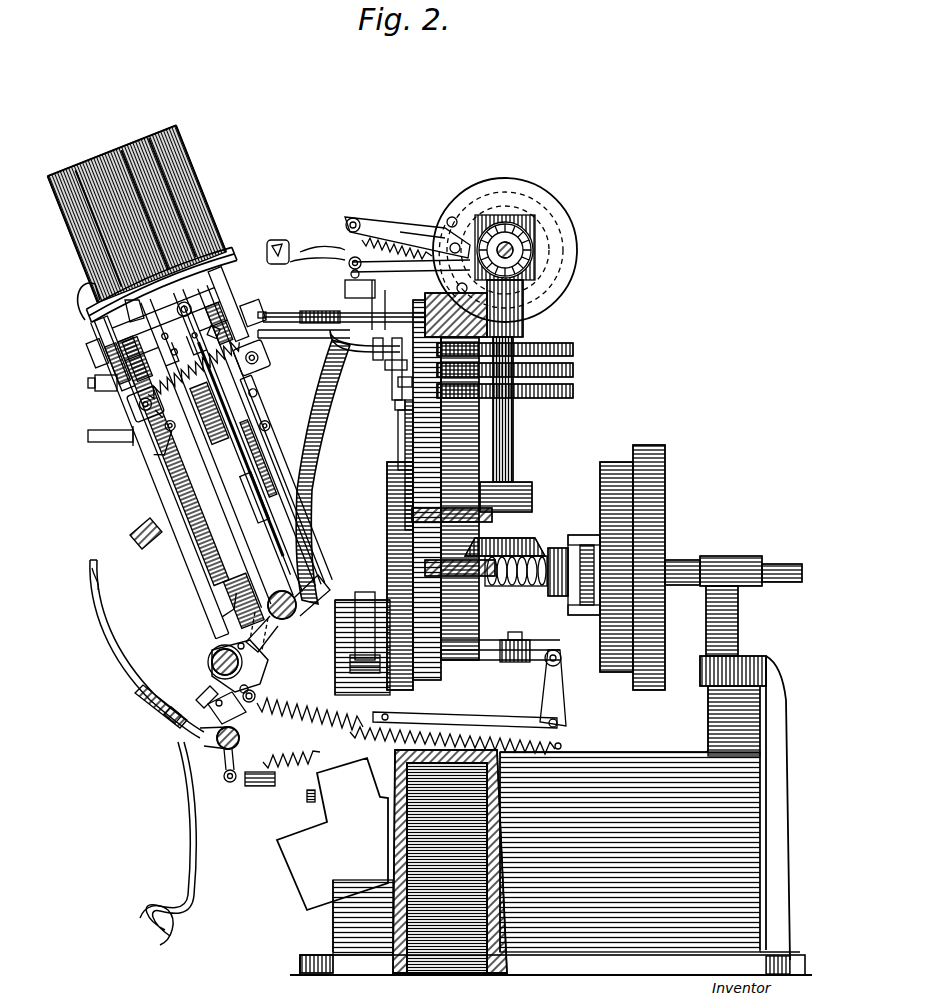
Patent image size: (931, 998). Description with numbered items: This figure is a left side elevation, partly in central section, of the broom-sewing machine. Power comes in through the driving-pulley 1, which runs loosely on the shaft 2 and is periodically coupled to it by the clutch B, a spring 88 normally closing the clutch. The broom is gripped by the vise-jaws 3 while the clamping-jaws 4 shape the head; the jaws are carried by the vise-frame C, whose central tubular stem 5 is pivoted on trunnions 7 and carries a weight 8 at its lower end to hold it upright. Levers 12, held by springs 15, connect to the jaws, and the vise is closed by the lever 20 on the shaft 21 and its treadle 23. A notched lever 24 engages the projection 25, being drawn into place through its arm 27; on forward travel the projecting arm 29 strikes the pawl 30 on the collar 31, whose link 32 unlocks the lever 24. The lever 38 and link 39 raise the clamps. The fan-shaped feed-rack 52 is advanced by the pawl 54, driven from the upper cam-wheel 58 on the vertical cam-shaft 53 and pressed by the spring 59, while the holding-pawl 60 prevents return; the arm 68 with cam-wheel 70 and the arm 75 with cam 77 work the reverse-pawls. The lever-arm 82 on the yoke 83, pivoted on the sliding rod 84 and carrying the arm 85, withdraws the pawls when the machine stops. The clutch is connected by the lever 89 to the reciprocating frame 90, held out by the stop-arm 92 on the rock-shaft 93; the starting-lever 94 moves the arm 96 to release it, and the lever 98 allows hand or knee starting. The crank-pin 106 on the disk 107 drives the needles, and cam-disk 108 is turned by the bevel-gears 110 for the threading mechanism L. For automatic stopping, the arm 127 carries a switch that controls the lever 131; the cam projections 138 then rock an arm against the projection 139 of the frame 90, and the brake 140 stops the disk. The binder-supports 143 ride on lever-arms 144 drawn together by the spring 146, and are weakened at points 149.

The driving-pulley 1 is at (665, 518).
The shaft 2 is at (772, 568).
The vise-jaws 3 is at (232, 256).
The clamping-jaws 4 is at (253, 305).
The central tubular stem 5 is at (330, 770).
The trunnions 7 is at (300, 605).
The weight 8 is at (332, 834).
The levers 12 is at (188, 450).
The springs 15 is at (180, 280).
The lever 20 is at (180, 830).
The shaft 21 is at (208, 662).
The treadle 23 is at (151, 915).
The notched lever 24 is at (145, 700).
The plate or projection 25 is at (199, 690).
The arm 27 is at (225, 711).
The projecting arm 29 is at (240, 630).
The pawl 30 is at (245, 666).
The collar 31 is at (238, 646).
The link 32 is at (259, 684).
The lever 38 is at (150, 518).
The link 39 is at (268, 412).
The feed-rack 52 is at (318, 270).
The vertical cam-shaft 53 is at (514, 452).
The pawl 54 is at (305, 318).
The upper cam-wheel 58 is at (573, 349).
The spring 59 is at (367, 318).
The holding-pawl 60 is at (310, 338).
The arm 68 is at (397, 378).
The cam-wheel 70 is at (573, 370).
The arm 75 is at (404, 410).
The cam 77 is at (573, 391).
The lever-arm 82 is at (365, 349).
The yoke piece or bar 83 is at (405, 440).
The vertically-sliding rod 84 is at (453, 526).
The arm 85 is at (530, 565).
The spring 88 is at (516, 579).
The lever 89 is at (560, 632).
The reciprocating frame 90 is at (530, 718).
The stop-arm 92 is at (280, 766).
The rock-shaft 93 is at (214, 744).
The starting-lever 94 is at (312, 470).
The arm 96 is at (218, 765).
The lever 98 is at (98, 655).
The crank-pin 106 is at (372, 588).
The disk 107 is at (387, 520).
The cam-disk 108 is at (560, 208).
The bevel-gears 110 is at (533, 250).
The arm 127 is at (218, 578).
The lever 131 is at (338, 245).
The cam projections 138 is at (455, 650).
The projection 139 is at (523, 647).
The brake 140 is at (500, 756).
The binder-supports 143 is at (100, 345).
The lever-arms 144 is at (130, 386).
The spring 146 is at (152, 405).
The weakened points 149 is at (84, 312).
The clutch B is at (574, 563).
The vise-frame C is at (261, 435).
The left-hand threading mechanism L is at (417, 217).